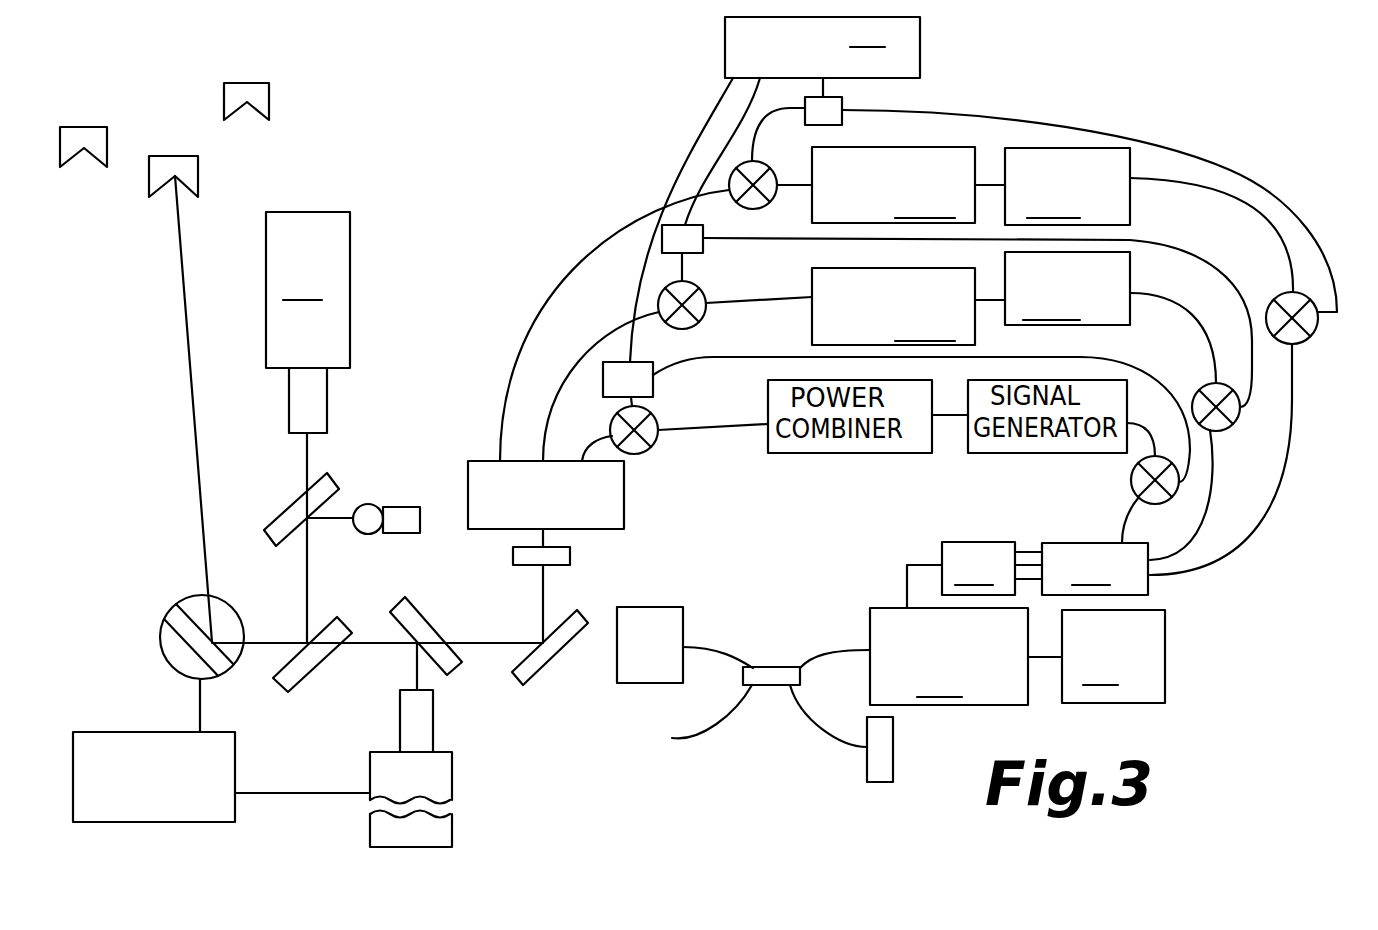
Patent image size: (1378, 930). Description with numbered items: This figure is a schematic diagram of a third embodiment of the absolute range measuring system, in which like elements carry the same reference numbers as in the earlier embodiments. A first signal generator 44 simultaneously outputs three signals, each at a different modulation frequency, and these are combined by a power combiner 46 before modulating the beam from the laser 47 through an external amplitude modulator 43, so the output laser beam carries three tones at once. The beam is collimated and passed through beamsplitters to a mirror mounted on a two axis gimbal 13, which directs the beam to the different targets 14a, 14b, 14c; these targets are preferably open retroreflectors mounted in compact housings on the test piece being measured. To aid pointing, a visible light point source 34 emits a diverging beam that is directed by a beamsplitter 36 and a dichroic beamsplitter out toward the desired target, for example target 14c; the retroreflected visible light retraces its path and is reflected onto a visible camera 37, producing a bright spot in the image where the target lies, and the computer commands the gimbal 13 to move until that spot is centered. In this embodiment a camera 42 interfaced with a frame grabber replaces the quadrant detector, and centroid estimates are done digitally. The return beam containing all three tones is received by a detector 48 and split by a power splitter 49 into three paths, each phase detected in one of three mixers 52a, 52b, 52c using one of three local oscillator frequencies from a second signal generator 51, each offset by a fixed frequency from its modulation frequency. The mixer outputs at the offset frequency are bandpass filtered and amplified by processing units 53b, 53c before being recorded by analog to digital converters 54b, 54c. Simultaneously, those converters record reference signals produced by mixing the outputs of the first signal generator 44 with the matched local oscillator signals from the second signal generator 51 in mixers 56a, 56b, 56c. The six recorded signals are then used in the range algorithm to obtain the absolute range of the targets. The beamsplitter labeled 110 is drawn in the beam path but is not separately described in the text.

The two axis gimbal 13 is at (161, 656).
The target 14a is at (269, 108).
The target 14b is at (198, 170).
The target 14c is at (107, 130).
The visible light point source 34 is at (402, 507).
The beamsplitter 36 is at (290, 514).
The visible camera 37 is at (308, 322).
The camera 42 is at (452, 775).
The external amplitude modulator 43 is at (949, 656).
The first signal generator 44 is at (1095, 569).
The power combiner 46 is at (978, 568).
The laser 47 is at (1113, 656).
The detector 48 is at (570, 557).
The power splitter 49 is at (624, 503).
The second signal generator 51 is at (822, 47).
The mixer 52a is at (643, 453).
The mixer 52b is at (700, 323).
The mixer 52c is at (747, 208).
The processing unit 53b is at (893, 306).
The processing unit 53c is at (893, 185).
The analog to digital converter 54b is at (1067, 288).
The analog to digital converter 54c is at (1067, 186).
The mixer 56a is at (1170, 498).
The mixer 56b is at (1232, 430).
The mixer 56c is at (1306, 341).
The beam splitter 110 is at (303, 677).